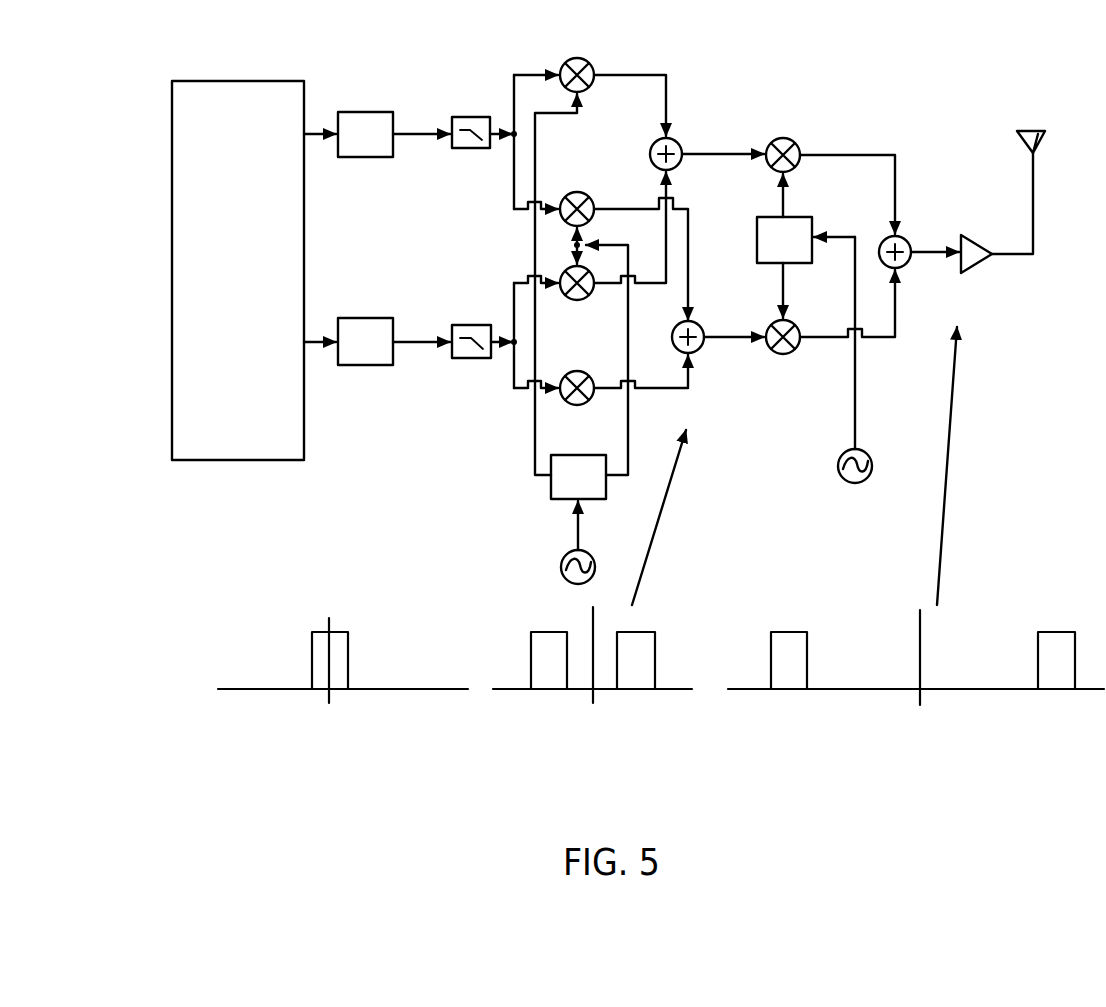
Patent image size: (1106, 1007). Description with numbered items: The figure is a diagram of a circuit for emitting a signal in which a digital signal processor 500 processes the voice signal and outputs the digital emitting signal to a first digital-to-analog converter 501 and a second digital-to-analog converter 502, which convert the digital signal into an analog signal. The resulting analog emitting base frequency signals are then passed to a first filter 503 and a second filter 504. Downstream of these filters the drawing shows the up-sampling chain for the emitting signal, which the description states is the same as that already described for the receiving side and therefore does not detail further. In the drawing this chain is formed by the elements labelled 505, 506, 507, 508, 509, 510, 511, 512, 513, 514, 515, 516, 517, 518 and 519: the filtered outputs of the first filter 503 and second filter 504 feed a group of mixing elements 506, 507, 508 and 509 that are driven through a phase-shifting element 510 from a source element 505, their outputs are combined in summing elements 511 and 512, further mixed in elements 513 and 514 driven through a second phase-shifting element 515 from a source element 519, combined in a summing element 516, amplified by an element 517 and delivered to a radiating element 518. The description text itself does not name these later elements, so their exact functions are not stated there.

The digital signal processor 500 is at (257, 112).
The first digital-to-analog converter 501 is at (388, 120).
The second digital-to-analog converter 502 is at (372, 324).
The first filter 503 is at (488, 124).
The second filter 504 is at (460, 330).
The first local oscillator 505 is at (561, 567).
The first mixer 506 is at (585, 58).
The second mixer 507 is at (579, 198).
The third mixer 508 is at (573, 299).
The fourth mixer 509 is at (571, 404).
The 0/90 degree phase shifter 510 is at (550, 490).
The first adder 511 is at (676, 143).
The second adder 512 is at (697, 350).
The fifth mixer 513 is at (790, 143).
The sixth mixer 514 is at (783, 355).
The 0/90 degree phase shifter 515 is at (797, 217).
The third adder 516 is at (900, 268).
The power amplifier 517 is at (972, 272).
The antenna 518 is at (1043, 150).
The second local oscillator 519 is at (866, 452).